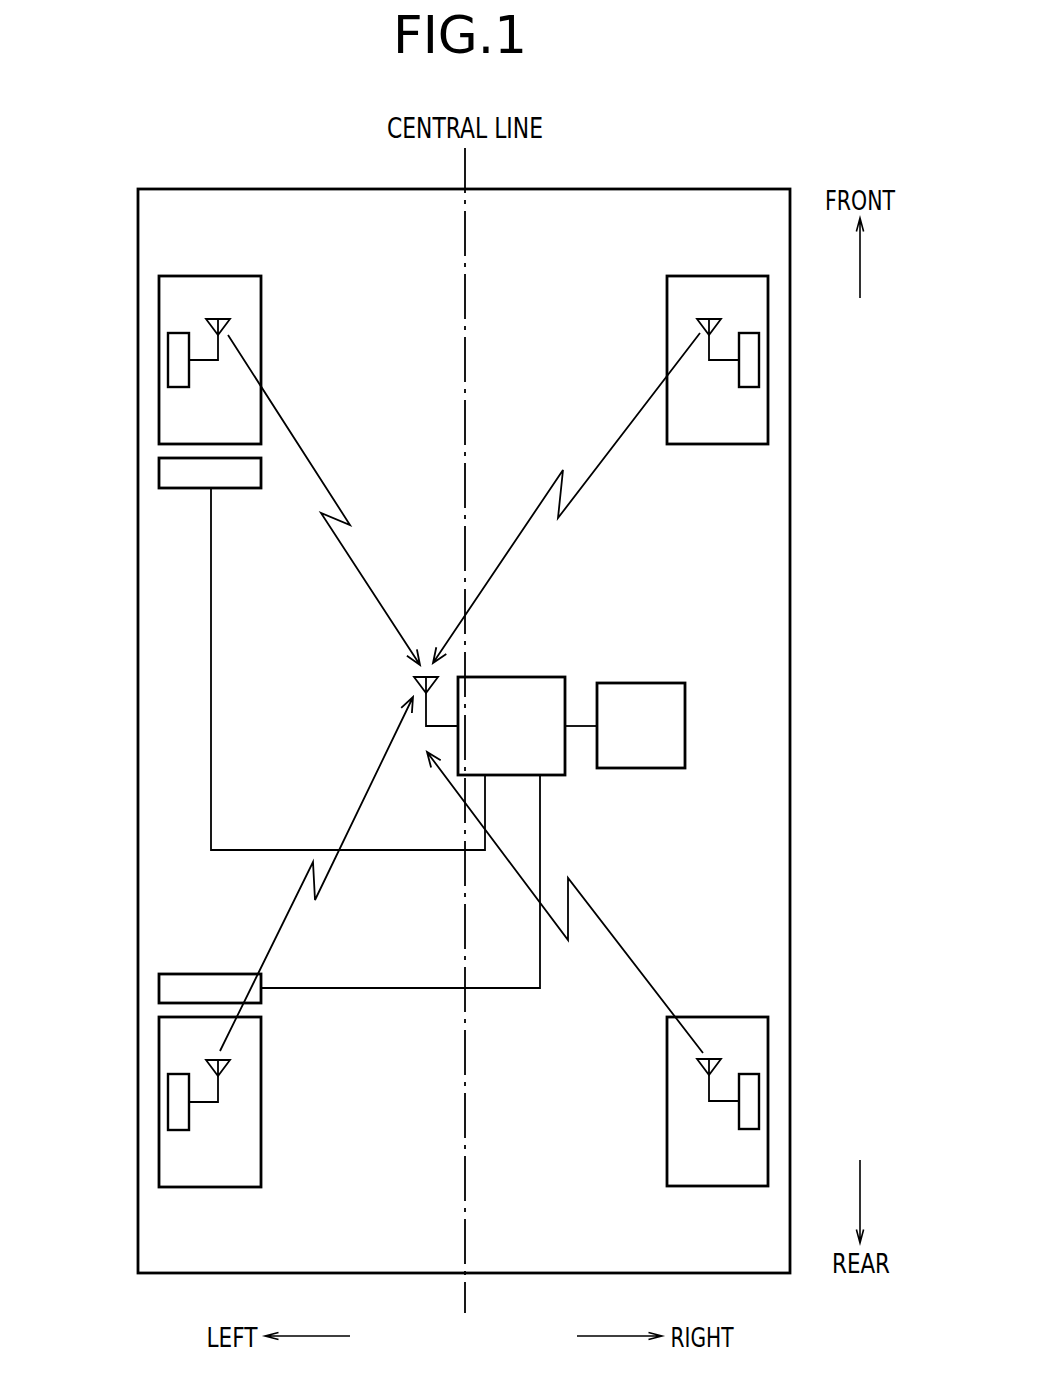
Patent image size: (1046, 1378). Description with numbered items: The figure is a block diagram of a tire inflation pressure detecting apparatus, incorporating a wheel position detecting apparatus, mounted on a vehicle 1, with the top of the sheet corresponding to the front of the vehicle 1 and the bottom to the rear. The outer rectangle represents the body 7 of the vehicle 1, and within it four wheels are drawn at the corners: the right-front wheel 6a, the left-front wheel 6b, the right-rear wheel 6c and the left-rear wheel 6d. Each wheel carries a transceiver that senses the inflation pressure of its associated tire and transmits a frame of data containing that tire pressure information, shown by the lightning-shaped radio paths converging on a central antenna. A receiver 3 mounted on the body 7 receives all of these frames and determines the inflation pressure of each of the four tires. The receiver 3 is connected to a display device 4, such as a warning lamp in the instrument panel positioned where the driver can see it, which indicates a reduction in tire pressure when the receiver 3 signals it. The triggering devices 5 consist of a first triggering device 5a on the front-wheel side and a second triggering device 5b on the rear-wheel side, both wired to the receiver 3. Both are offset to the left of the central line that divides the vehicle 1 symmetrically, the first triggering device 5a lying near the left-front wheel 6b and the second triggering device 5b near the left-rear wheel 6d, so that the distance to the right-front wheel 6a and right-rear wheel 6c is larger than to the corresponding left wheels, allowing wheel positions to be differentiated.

The vehicle 1 is at (496, 681).
The receiver 3 is at (515, 677).
The display device 4 is at (640, 683).
The triggering devices 5 is at (278, 730).
The first triggering device 5a is at (159, 472).
The second triggering device 5b is at (159, 910).
The right-front wheel 6a is at (720, 276).
The left-front wheel 6b is at (203, 276).
The right-rear wheel 6c is at (719, 1186).
The left-rear wheel 6d is at (210, 1187).
The body 7 is at (790, 631).